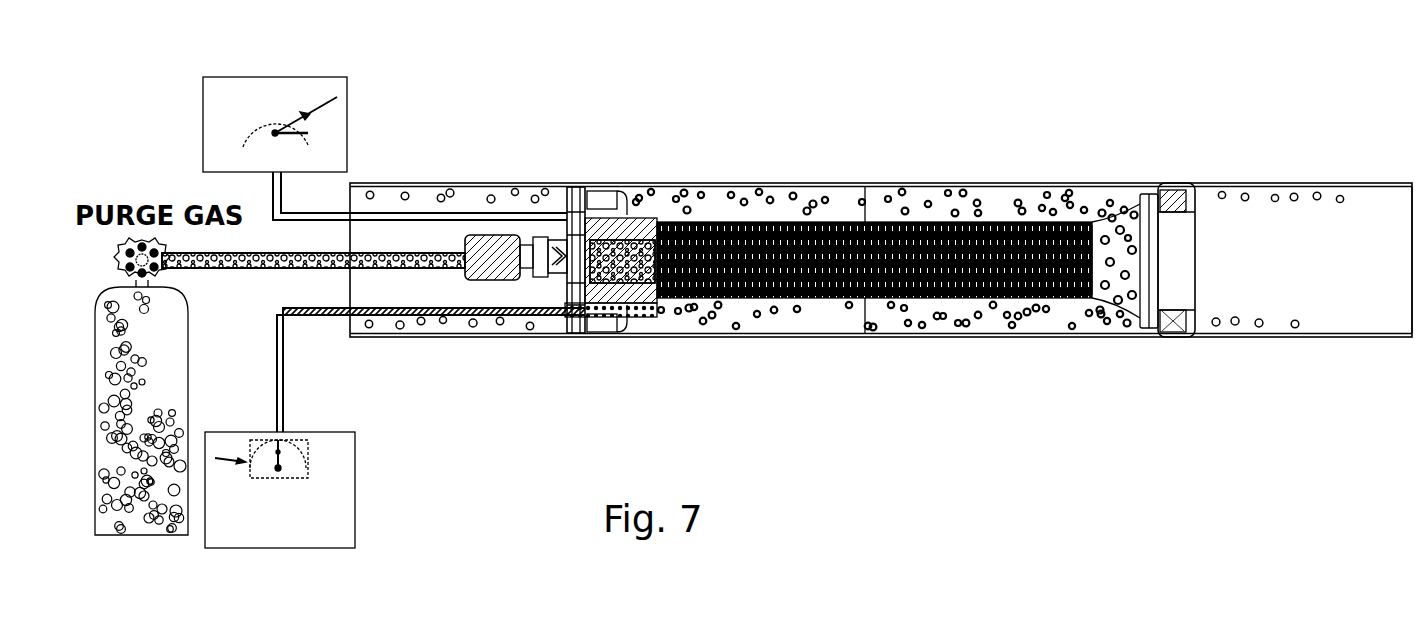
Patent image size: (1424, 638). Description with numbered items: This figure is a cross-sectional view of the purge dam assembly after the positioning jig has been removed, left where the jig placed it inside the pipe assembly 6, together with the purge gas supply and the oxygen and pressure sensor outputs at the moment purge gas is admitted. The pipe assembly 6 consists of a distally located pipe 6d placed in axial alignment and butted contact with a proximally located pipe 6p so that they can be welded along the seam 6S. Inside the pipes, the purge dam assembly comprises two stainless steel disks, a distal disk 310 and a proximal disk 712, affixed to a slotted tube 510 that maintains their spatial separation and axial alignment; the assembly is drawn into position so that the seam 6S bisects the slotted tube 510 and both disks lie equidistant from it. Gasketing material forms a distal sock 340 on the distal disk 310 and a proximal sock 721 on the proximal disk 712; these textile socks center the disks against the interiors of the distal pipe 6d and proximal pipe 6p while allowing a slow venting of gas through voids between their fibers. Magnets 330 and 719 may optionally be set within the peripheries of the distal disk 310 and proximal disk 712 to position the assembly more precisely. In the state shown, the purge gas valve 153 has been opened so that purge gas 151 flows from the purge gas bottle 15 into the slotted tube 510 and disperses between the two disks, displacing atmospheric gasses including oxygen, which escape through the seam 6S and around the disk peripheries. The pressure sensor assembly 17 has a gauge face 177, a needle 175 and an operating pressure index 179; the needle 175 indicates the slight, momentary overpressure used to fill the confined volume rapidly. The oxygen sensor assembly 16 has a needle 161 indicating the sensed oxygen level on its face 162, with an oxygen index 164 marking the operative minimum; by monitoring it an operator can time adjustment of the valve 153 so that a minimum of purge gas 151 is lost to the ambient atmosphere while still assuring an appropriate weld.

The pipe assembly 6 is at (797, 180).
The seam 6S is at (865, 185).
The proximally located pipe 6p is at (728, 194).
The distally located pipe 6d is at (1397, 260).
The purge gas bottle 15 is at (126, 540).
The oxygen sensor assembly 16 is at (358, 498).
The pressure sensor assembly 17 is at (201, 84).
The purge gas 151 is at (515, 190).
The purge gas valve 153 is at (122, 257).
The needle 161 is at (278, 479).
The face 162 is at (285, 439).
The oxygen index 164 is at (222, 463).
The needle 175 is at (306, 136).
The gauge face 177 is at (246, 125).
The operating pressure index 179 is at (310, 117).
The distal disk 310 is at (1190, 300).
The magnet 330 is at (1173, 321).
The distal sock 340 is at (1186, 192).
The slotted tube 510 is at (757, 300).
The proximal disk 712 is at (584, 190).
The magnet 719 is at (607, 261).
The proximal sock 721 is at (588, 338).